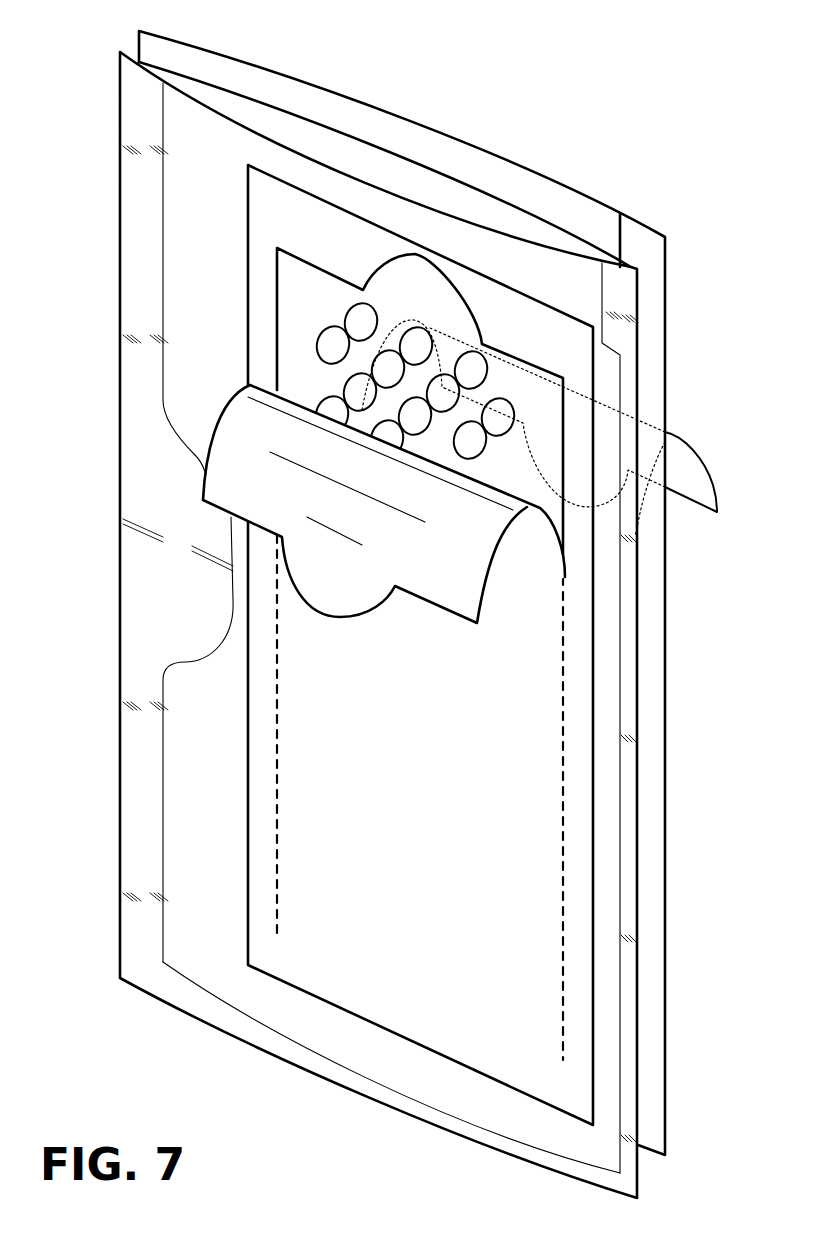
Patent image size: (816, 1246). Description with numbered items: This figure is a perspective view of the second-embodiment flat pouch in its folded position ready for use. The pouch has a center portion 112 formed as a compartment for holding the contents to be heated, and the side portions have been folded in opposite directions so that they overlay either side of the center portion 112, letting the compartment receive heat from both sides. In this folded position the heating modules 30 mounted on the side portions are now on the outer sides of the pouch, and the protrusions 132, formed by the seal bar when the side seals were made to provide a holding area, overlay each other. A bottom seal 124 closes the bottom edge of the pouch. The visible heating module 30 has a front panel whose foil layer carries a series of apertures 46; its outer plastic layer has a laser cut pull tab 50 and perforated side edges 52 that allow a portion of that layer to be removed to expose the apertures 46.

The center portion 112 is at (400, 112).
The apertures 46 is at (330, 347).
The protrusions 132 is at (160, 567).
The perforated side edges 52 is at (277, 682).
The heating module 30 is at (203, 853).
The pull tab 50 is at (347, 603).
The bottom seal 124 is at (367, 1082).